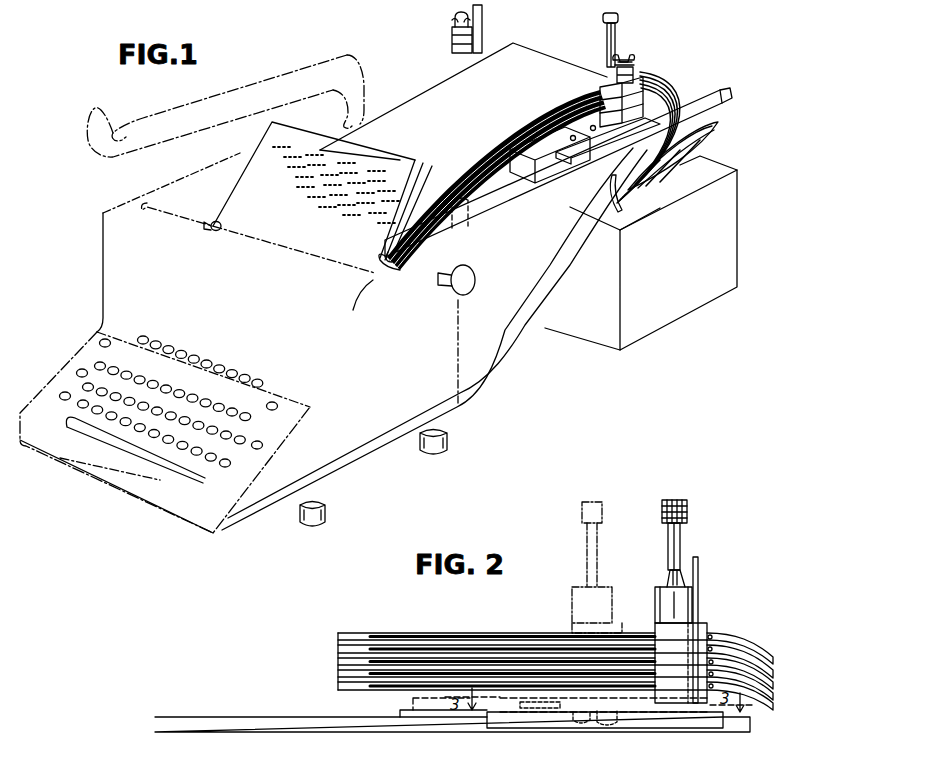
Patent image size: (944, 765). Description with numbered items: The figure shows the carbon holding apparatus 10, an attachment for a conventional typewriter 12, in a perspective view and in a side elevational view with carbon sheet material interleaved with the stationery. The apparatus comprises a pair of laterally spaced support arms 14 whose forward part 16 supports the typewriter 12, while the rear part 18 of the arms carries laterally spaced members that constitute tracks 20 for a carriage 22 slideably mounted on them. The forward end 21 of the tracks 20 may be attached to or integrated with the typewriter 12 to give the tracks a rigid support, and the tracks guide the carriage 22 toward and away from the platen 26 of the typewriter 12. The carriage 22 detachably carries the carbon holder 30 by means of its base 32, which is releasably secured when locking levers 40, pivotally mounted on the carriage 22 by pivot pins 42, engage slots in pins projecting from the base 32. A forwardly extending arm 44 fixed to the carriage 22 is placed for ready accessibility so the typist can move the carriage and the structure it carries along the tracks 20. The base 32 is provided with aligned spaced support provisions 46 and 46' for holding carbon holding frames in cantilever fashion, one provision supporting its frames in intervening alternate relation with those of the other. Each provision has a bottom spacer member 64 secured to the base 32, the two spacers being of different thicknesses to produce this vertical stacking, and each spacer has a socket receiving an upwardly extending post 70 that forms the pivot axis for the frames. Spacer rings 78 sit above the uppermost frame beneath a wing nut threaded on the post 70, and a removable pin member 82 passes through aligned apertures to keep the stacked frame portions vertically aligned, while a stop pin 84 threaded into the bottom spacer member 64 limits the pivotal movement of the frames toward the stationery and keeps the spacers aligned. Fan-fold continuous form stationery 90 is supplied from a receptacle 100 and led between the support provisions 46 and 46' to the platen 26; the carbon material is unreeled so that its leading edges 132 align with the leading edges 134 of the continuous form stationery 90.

In FIG. 1, the carbon holding apparatus 10 is at (431, 70).
In FIG. 1, the typewriter 12 is at (236, 305).
In FIG. 1, the support arms 14 is at (510, 357).
In FIG. 1, the forward part 16 is at (397, 450).
In FIG. 1, the rear part 18 is at (606, 216).
In FIG. 1, the tracks 20 is at (513, 202).
In FIG. 2, the tracks 20 is at (286, 722).
In FIG. 1, the forward end 21 is at (472, 223).
In FIG. 1, the carriage 22 is at (554, 159).
In FIG. 2, the carriage 22 is at (526, 728).
In FIG. 1, the platen 26 is at (390, 263).
In FIG. 1, the carbon holder 30 is at (673, 156).
In FIG. 1, the base 32 is at (585, 127).
In FIG. 2, the base 32 is at (650, 705).
In FIG. 2, the locking lever 40 is at (592, 726).
In FIG. 2, the pivot pin 42 is at (578, 723).
In FIG. 1, the forwardly extending arm 44 is at (236, 96).
In FIG. 1, the support provision 46 is at (446, 29).
In FIG. 1, the support provision 46' is at (633, 75).
In FIG. 2, the support provision 46' is at (701, 594).
In FIG. 2, the bottom spacer member 64 is at (690, 700).
In FIG. 2, the post 70 is at (666, 572).
In FIG. 1, the spacer ring 78 is at (633, 70).
In FIG. 1, the pin member 82 is at (616, 30).
In FIG. 2, the pin member 82 is at (685, 528).
In FIG. 2, the stop pin 84 is at (699, 568).
In FIG. 1, the continuous form stationery 90 is at (400, 101).
In FIG. 2, the continuous form stationery 90 is at (751, 654).
In FIG. 1, the receptacle 100 is at (691, 259).
In FIG. 1, the leading edges 132 is at (424, 166).
In FIG. 1, the leading edges 134 is at (416, 159).